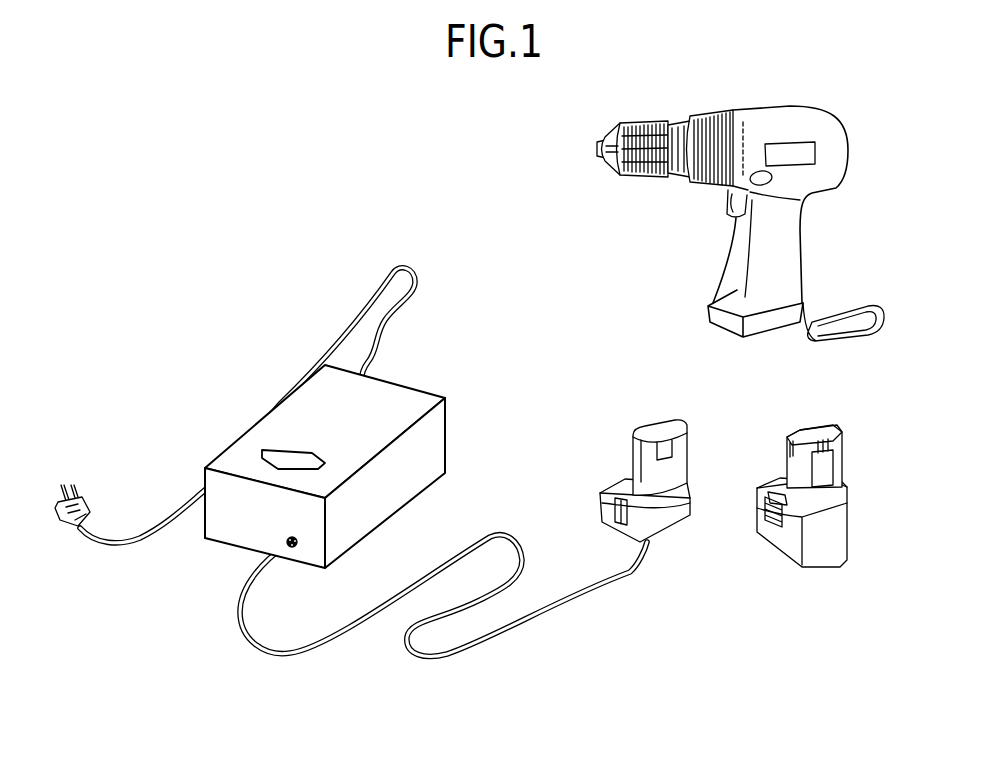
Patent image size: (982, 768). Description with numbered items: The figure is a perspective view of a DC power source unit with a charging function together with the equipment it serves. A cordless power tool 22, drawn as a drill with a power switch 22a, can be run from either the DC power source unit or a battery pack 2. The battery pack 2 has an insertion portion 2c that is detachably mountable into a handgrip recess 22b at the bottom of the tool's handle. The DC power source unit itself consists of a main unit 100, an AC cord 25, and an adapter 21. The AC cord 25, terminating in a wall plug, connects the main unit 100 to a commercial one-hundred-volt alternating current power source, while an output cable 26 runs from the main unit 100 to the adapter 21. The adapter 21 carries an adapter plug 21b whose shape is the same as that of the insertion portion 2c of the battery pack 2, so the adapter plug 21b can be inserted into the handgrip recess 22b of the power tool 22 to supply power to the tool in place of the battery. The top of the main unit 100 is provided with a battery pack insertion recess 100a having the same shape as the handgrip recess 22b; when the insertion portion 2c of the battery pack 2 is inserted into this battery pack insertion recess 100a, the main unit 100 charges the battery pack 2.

The battery pack 2 is at (837, 497).
The insertion portion 2c is at (843, 460).
The adapter 21 is at (685, 497).
The adapter plug 21b is at (687, 447).
The cordless power tool 22 is at (740, 253).
The power switch 22a is at (723, 205).
The handgrip recess 22b is at (732, 345).
The AC cord 25 is at (67, 528).
The output cable 26 is at (500, 528).
The main unit 100 is at (361, 464).
The battery pack insertion recess 100a is at (270, 447).